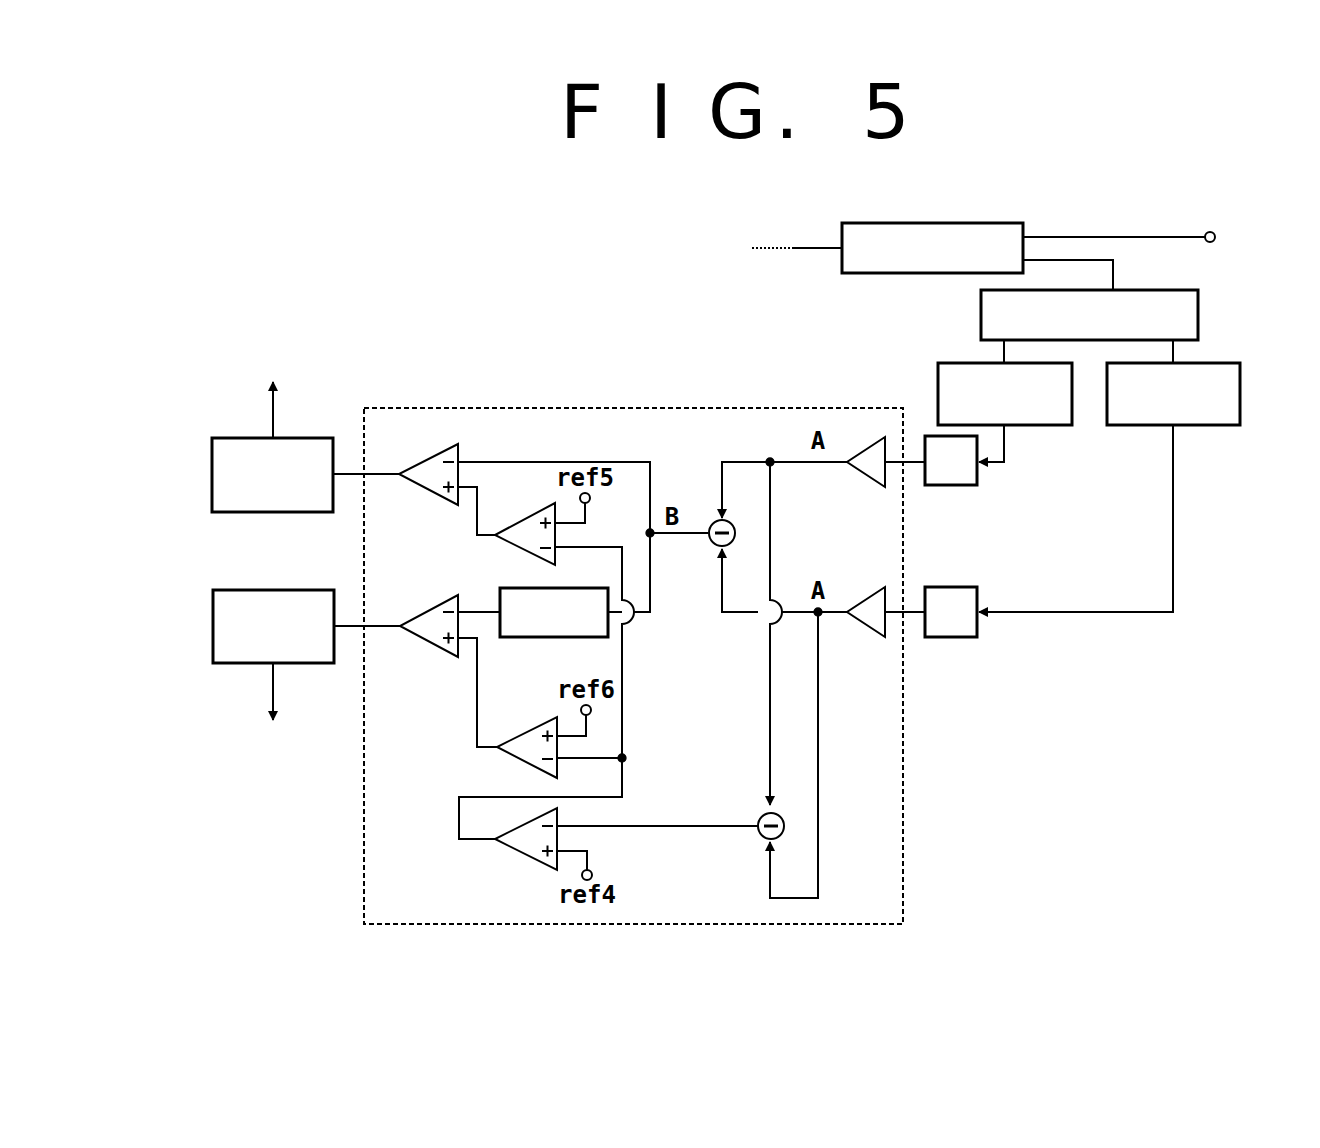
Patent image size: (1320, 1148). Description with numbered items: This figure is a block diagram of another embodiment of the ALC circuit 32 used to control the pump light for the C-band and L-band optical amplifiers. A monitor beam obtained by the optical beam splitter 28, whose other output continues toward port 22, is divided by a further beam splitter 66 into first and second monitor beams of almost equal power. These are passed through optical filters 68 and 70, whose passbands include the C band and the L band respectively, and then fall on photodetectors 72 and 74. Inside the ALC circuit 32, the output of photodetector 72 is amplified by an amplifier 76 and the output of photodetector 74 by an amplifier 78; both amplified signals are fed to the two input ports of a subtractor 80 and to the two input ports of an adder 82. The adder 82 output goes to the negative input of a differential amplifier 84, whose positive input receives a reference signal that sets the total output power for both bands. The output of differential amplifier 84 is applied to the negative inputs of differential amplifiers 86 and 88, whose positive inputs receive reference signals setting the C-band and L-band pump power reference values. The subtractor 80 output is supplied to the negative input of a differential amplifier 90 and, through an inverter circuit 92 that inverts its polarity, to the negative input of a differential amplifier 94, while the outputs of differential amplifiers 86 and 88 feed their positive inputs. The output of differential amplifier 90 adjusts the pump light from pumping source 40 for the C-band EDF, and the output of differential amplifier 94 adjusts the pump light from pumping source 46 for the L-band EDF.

The output port 22 is at (1210, 232).
The optical beam splitter 28 is at (926, 278).
The ALC circuit 32 is at (535, 408).
The pumping source 40 is at (297, 512).
The pumping source 46 is at (250, 592).
The beam splitter 66 is at (1173, 289).
The optical filter 68 is at (1043, 425).
The optical filter 70 is at (1213, 425).
The photodetector 72 is at (950, 485).
The photodetector 74 is at (950, 637).
The amplifier 76 is at (863, 478).
The amplifier 78 is at (863, 628).
The subtractor 80 is at (711, 545).
The adder 82 is at (758, 838).
The differential amplifier 84 is at (533, 864).
The differential amplifier 86 is at (526, 519).
The differential amplifier 88 is at (532, 732).
The differential amplifier 90 is at (421, 461).
The inverter circuit 92 is at (553, 637).
The differential amplifier 94 is at (424, 611).